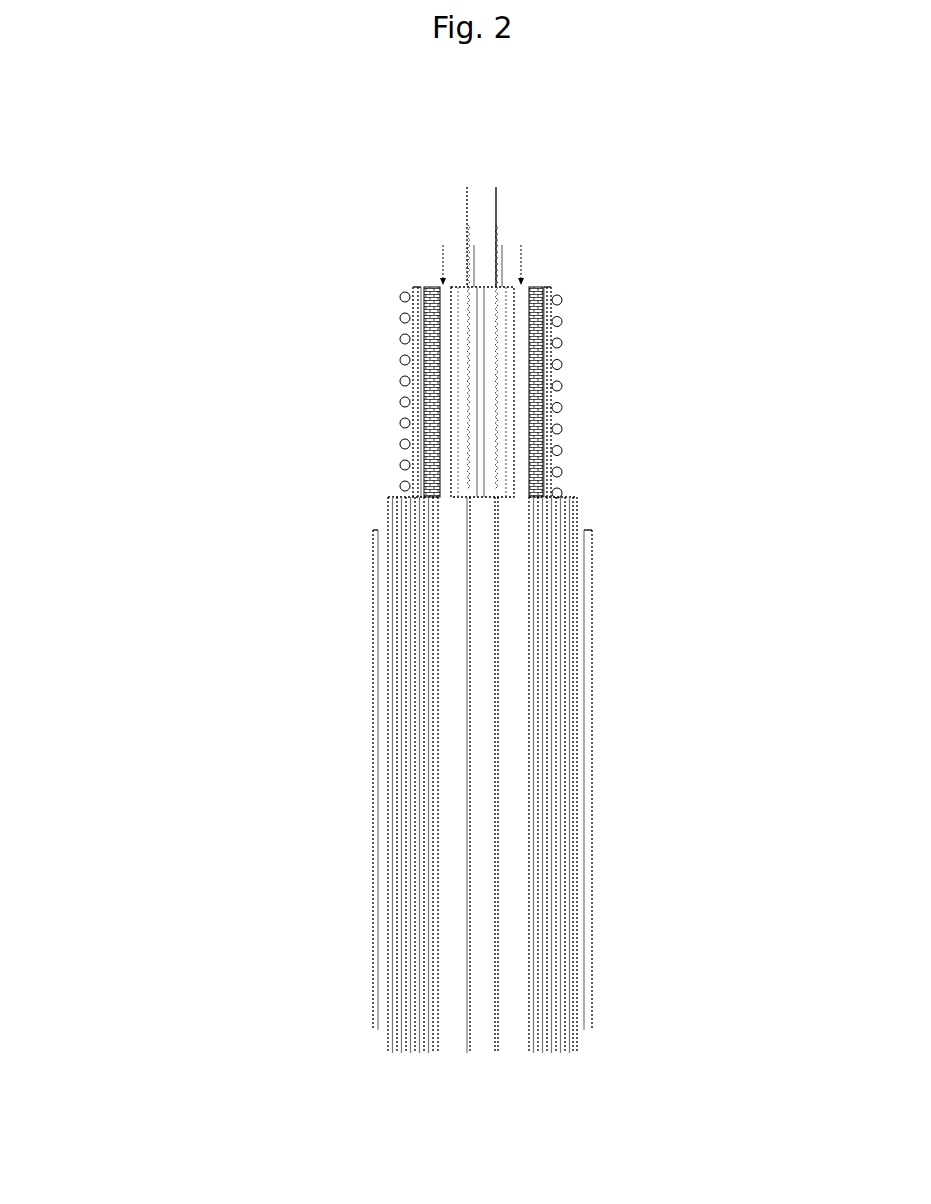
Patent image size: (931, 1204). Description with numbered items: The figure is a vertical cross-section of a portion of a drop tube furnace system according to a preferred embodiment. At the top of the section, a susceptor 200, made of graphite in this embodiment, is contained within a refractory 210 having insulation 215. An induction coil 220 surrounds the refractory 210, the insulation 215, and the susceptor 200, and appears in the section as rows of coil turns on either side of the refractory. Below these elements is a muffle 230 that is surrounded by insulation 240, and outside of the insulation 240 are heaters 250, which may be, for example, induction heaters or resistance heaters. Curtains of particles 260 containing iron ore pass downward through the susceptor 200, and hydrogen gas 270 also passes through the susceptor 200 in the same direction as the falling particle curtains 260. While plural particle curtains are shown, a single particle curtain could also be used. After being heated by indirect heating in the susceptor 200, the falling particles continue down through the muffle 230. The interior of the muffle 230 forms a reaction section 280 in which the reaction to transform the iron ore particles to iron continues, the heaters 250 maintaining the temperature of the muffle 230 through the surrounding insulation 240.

The susceptor 200 is at (447, 297).
The refractory 210 is at (418, 370).
The insulation 215 is at (411, 438).
The induction coil 220 is at (399, 340).
The muffle 230 is at (536, 657).
The insulation 240 is at (420, 568).
The heaters 250 is at (592, 766).
The curtains of particles 260 is at (472, 205).
The hydrogen gas 270 is at (505, 266).
The reaction section 280 is at (487, 685).